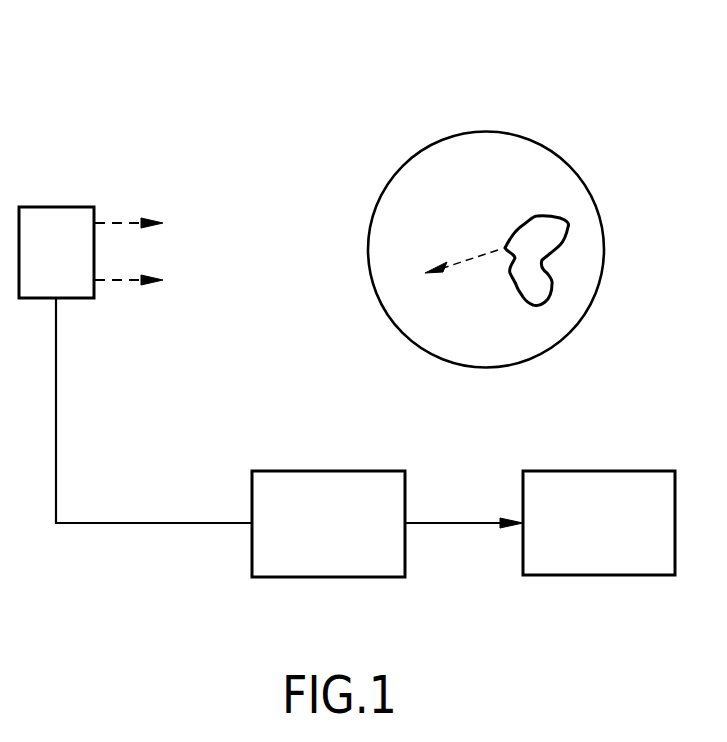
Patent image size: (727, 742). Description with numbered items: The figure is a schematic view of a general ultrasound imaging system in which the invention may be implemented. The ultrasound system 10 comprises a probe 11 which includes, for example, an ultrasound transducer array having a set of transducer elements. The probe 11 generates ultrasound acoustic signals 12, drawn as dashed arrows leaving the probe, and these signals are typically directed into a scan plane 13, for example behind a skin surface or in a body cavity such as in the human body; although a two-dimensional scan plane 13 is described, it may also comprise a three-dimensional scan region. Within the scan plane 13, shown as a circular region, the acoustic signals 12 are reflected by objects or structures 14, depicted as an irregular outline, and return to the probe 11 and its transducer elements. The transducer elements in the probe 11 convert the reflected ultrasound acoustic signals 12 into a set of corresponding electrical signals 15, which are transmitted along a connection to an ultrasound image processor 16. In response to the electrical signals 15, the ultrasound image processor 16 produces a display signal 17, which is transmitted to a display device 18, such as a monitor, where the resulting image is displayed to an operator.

The ultrasound system 10 is at (96, 58).
The probe 11 is at (40, 207).
The ultrasound acoustic signals 12 is at (117, 223).
The scan plane 13 is at (560, 153).
The objects or structures 14 is at (538, 215).
The electrical signals 15 is at (196, 505).
The ultrasound image processor 16 is at (313, 470).
The display signal 17 is at (473, 505).
The display device 18 is at (622, 471).